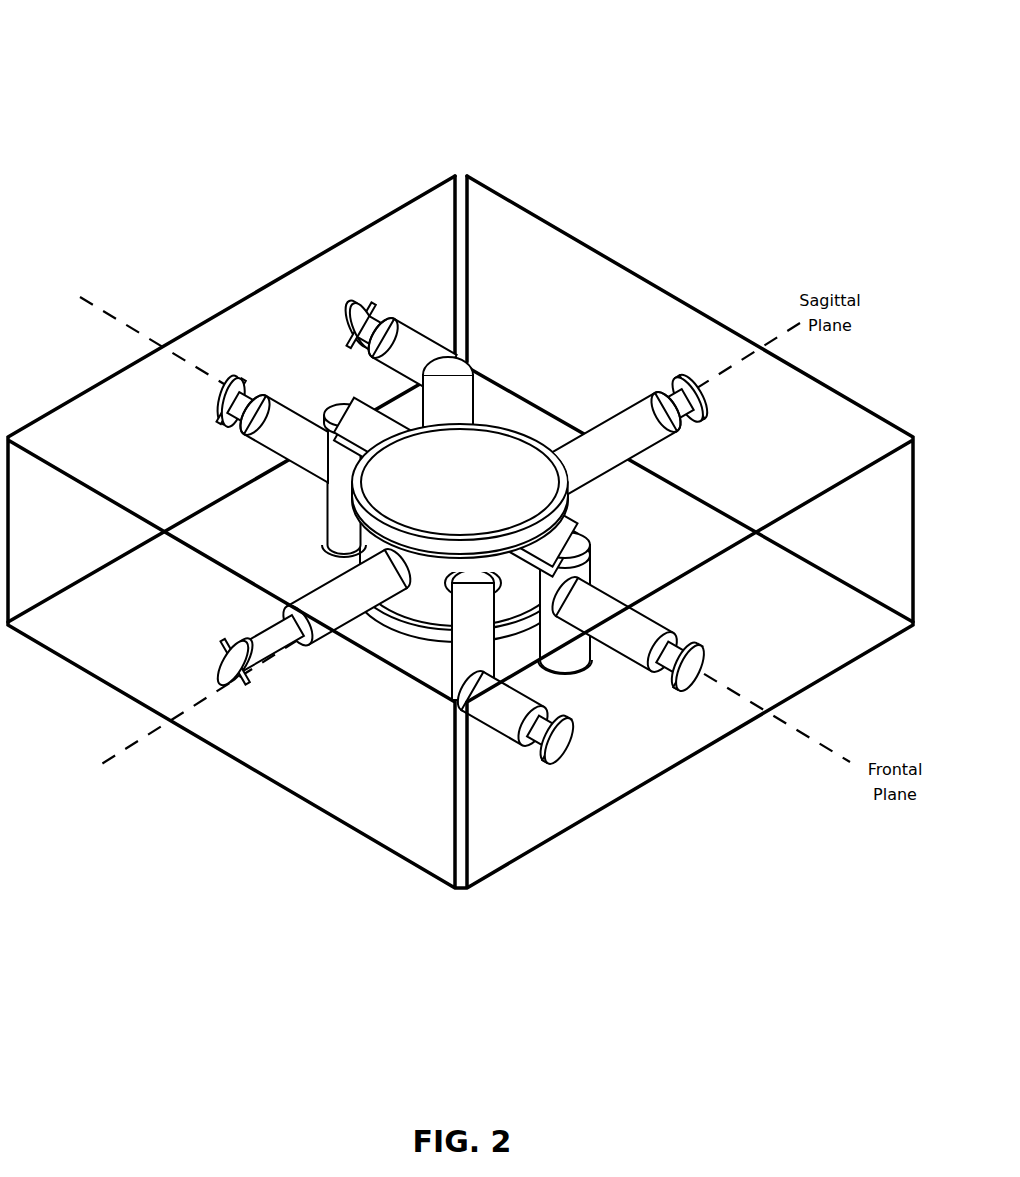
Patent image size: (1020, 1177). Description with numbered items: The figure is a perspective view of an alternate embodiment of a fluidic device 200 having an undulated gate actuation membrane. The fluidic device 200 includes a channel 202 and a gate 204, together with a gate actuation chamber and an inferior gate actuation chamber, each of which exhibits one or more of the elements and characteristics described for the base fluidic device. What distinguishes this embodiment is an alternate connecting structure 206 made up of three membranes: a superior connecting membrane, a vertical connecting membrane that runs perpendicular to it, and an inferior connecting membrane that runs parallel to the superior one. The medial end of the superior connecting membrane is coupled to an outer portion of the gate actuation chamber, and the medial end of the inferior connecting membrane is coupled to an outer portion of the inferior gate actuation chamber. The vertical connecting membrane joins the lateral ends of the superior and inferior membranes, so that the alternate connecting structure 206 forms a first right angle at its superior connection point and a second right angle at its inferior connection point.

The fluidic device 200 is at (245, 58).
The channel 202 is at (300, 650).
The gate 204 is at (352, 513).
The alternate connecting structure 206 is at (571, 658).